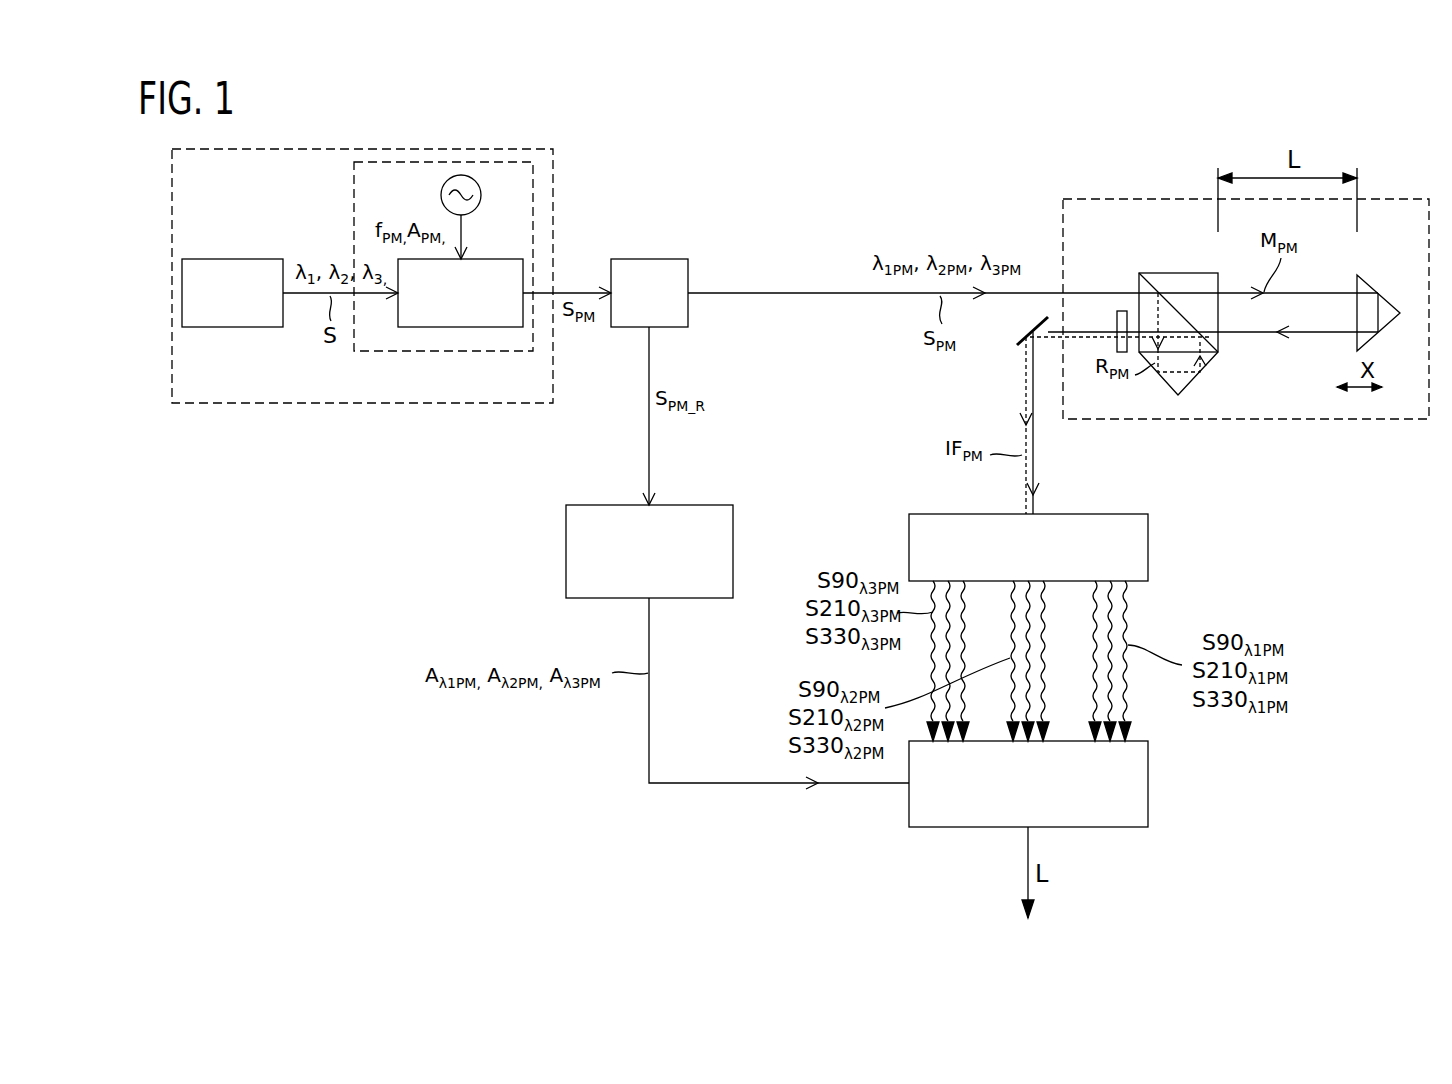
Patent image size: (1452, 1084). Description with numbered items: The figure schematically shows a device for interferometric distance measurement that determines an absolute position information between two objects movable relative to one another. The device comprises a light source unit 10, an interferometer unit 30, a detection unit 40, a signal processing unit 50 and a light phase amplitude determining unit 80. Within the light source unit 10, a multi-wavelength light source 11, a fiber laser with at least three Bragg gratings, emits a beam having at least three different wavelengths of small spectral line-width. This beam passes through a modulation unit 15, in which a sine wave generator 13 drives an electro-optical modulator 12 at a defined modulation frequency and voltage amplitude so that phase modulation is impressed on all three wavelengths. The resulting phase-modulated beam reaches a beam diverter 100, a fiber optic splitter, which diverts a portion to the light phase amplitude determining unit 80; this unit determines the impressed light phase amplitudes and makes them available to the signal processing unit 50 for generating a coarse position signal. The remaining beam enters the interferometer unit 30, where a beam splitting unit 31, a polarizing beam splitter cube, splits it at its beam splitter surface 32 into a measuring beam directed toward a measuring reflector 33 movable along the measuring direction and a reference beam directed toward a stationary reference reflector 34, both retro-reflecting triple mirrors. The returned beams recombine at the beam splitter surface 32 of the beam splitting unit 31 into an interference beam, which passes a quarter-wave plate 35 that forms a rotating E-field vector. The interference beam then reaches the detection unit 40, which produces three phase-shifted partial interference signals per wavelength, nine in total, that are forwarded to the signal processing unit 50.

The light source unit 10 is at (310, 403).
The multi-wavelength light source 11 is at (216, 313).
The electro-optical modulator 12 is at (499, 313).
The sine wave generator 13 is at (441, 195).
The modulation unit 15 is at (533, 171).
The beam diverter 100 is at (648, 272).
The interferometer unit 30 is at (1303, 403).
The beam splitting unit 31 is at (1196, 283).
The beam splitter surface 32 is at (1152, 280).
The measuring reflector 33 is at (1370, 283).
The reference reflector 34 is at (1195, 378).
The λ/4 plate 35 is at (1117, 323).
The detection unit 40 is at (1137, 545).
The signal processing unit 50 is at (1135, 787).
The light phase amplitude determining unit 80 is at (580, 553).